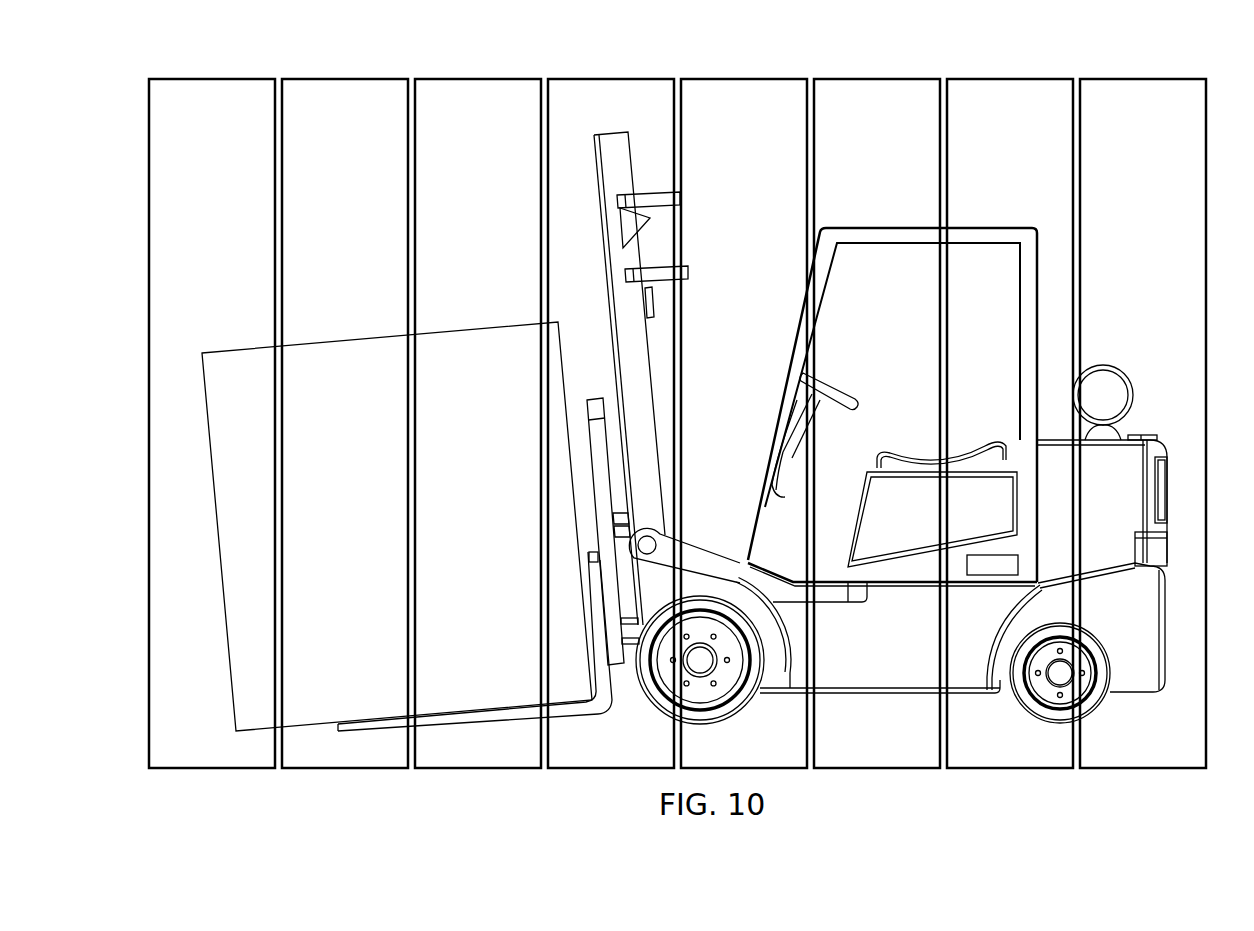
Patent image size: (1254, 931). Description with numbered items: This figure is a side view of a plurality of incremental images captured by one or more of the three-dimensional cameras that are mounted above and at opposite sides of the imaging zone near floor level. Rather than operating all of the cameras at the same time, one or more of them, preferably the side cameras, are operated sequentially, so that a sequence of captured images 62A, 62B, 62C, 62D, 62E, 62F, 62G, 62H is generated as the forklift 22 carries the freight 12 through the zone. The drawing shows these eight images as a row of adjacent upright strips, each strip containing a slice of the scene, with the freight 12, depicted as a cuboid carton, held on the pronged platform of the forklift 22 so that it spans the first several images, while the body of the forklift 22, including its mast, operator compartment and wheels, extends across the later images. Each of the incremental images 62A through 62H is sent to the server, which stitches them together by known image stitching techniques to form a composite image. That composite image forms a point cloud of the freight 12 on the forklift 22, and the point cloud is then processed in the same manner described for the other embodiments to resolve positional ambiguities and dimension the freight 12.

The captured image 62A is at (218, 102).
The captured image 62B is at (351, 102).
The captured image 62C is at (484, 102).
The captured image 62D is at (617, 102).
The captured image 62E is at (750, 102).
The captured image 62F is at (883, 102).
The captured image 62G is at (1016, 102).
The captured image 62H is at (1149, 102).
The freight 12 is at (380, 336).
The forklift 22 is at (885, 695).